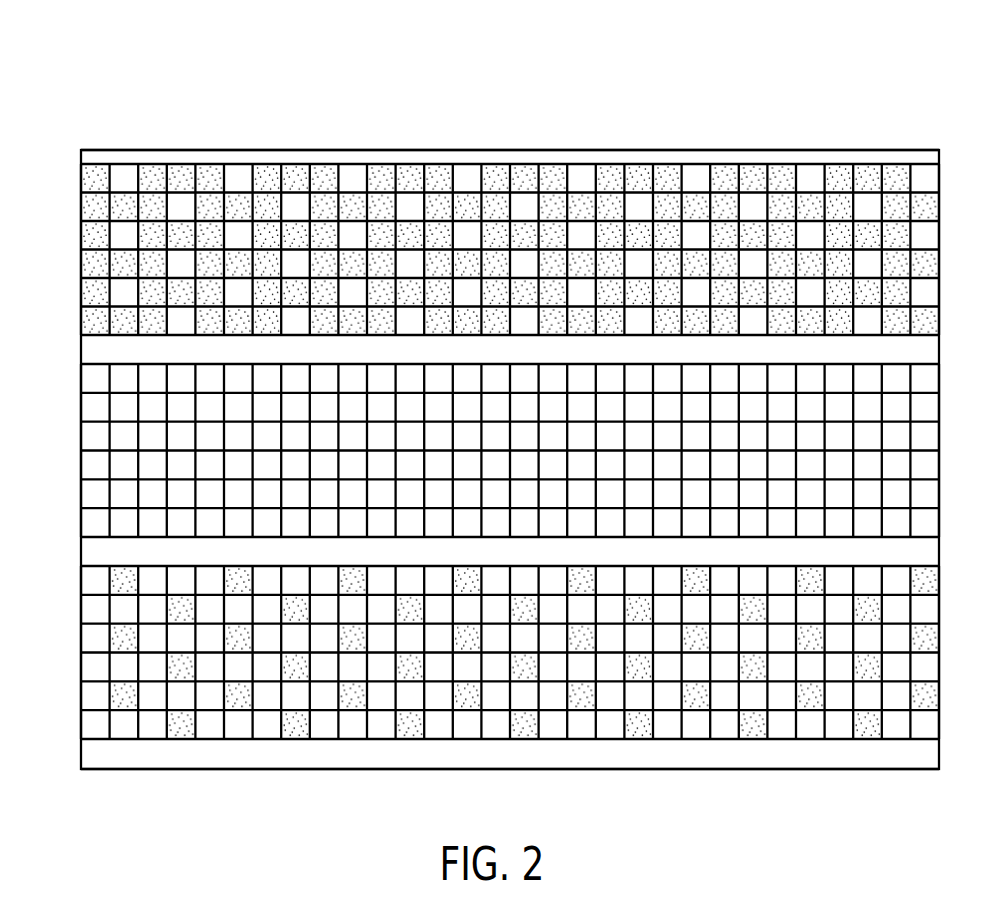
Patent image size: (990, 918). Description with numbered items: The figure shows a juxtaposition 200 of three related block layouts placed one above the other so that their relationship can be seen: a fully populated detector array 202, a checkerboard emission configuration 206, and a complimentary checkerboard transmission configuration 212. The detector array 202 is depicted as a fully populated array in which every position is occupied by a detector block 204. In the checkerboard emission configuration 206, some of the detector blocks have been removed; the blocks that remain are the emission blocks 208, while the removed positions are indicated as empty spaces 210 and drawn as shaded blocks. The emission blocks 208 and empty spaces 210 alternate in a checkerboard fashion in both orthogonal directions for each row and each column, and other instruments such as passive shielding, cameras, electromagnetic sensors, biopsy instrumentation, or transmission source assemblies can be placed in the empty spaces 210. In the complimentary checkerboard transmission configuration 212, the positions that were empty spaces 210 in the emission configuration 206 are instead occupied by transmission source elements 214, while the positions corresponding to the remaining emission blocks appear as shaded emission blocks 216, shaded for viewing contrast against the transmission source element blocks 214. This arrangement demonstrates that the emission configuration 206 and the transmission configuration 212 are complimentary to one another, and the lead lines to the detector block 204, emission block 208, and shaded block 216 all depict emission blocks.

The juxtaposition 200 is at (149, 77).
The detector array 202 is at (80, 494).
The detector block 204 is at (900, 441).
The checkerboard emission configuration 206 is at (80, 722).
The emission block 208 is at (216, 731).
The empty space 210 is at (418, 731).
The complimentary checkerboard transmission configuration 212 is at (208, 176).
The transmission source element 214 is at (353, 176).
The shaded emission block 216 is at (553, 173).